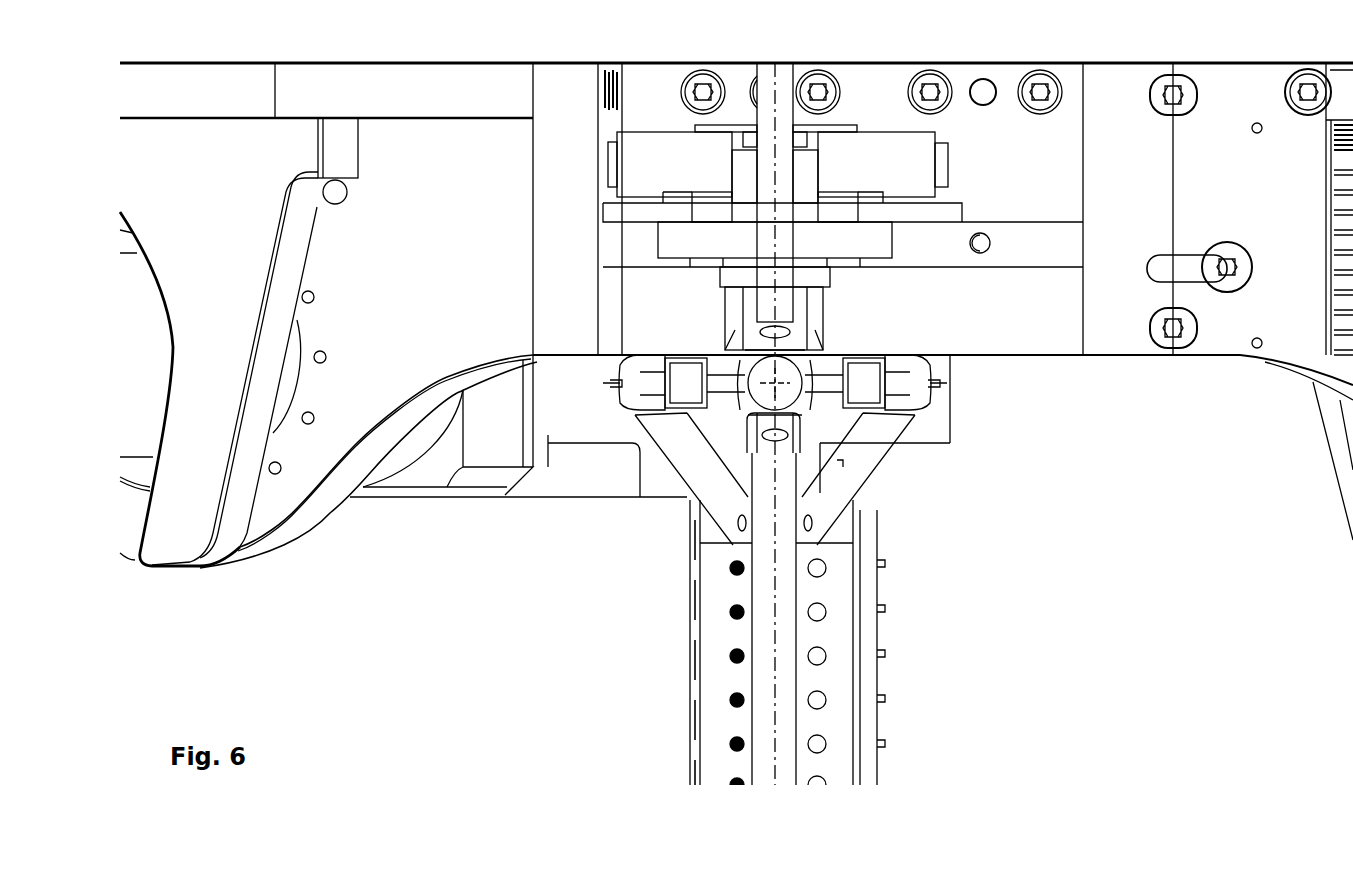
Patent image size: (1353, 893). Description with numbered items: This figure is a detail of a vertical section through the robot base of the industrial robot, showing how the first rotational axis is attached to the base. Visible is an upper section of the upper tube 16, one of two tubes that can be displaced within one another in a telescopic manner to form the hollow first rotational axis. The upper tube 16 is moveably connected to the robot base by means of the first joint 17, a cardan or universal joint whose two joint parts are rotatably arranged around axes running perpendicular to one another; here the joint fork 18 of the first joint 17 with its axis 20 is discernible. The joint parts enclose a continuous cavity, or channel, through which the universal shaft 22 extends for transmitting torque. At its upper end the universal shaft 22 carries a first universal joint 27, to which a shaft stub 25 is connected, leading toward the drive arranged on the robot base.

The upper tube 16 is at (700, 630).
The first joint 17 is at (935, 472).
The joint fork 18 is at (867, 472).
The axis 20 is at (935, 383).
The universal shaft 22 is at (768, 677).
The shaft stub 25 is at (787, 72).
The first universal joint 27 is at (787, 373).